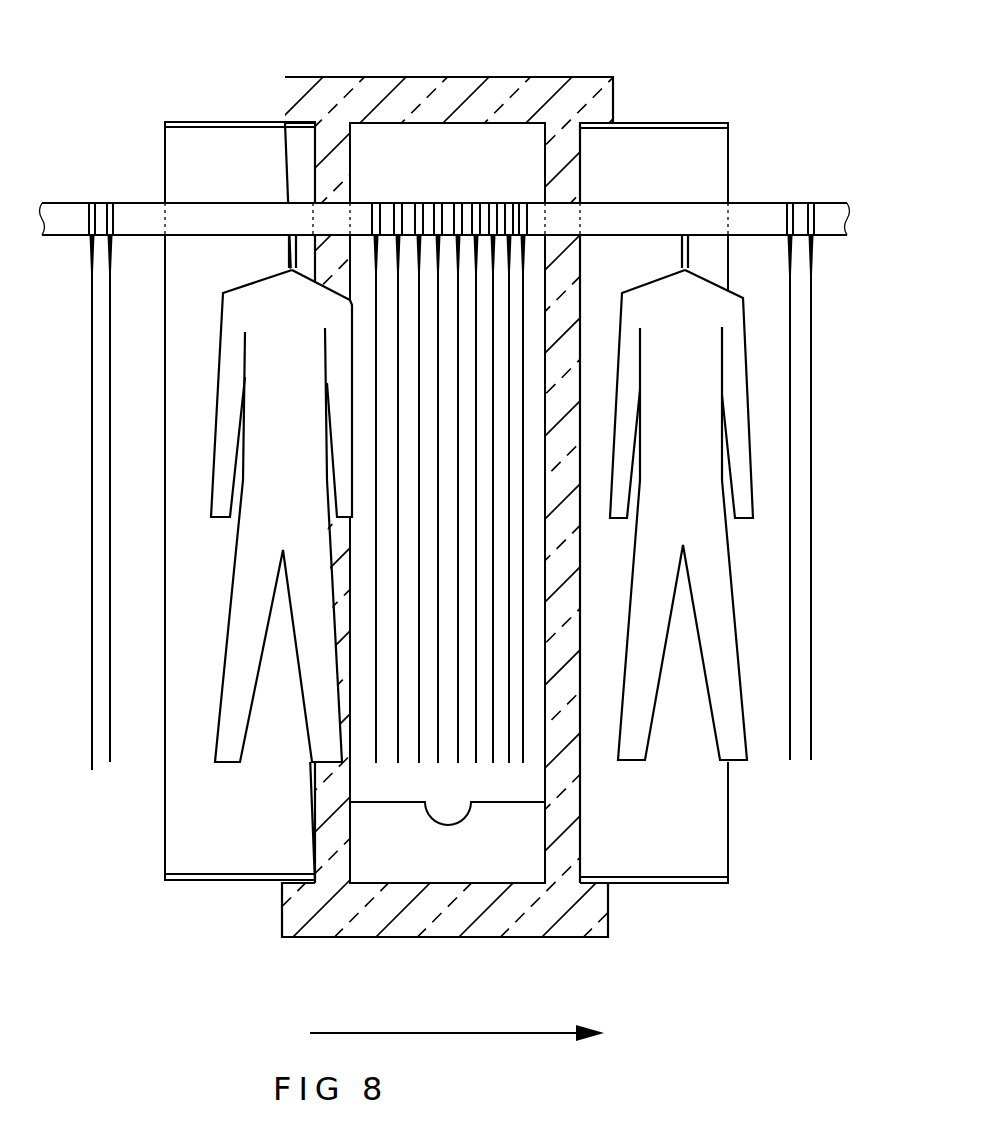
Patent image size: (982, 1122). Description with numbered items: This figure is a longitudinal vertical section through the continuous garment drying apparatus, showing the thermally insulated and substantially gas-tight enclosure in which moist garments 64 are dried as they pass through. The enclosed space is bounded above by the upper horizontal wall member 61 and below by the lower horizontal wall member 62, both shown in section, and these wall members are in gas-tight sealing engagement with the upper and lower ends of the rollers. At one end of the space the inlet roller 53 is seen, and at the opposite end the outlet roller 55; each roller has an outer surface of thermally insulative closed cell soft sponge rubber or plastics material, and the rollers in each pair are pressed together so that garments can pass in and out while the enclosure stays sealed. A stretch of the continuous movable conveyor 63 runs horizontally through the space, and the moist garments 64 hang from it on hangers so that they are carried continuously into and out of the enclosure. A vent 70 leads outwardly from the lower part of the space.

The inlet roller 53 is at (167, 157).
The outlet roller 55 is at (730, 148).
The upper horizontal wall member 61 is at (567, 112).
The lower horizontal wall member 62 is at (327, 913).
The continuous movable conveyor 63 is at (63, 215).
The moist garments 64 is at (227, 742).
The vent 70 is at (448, 818).